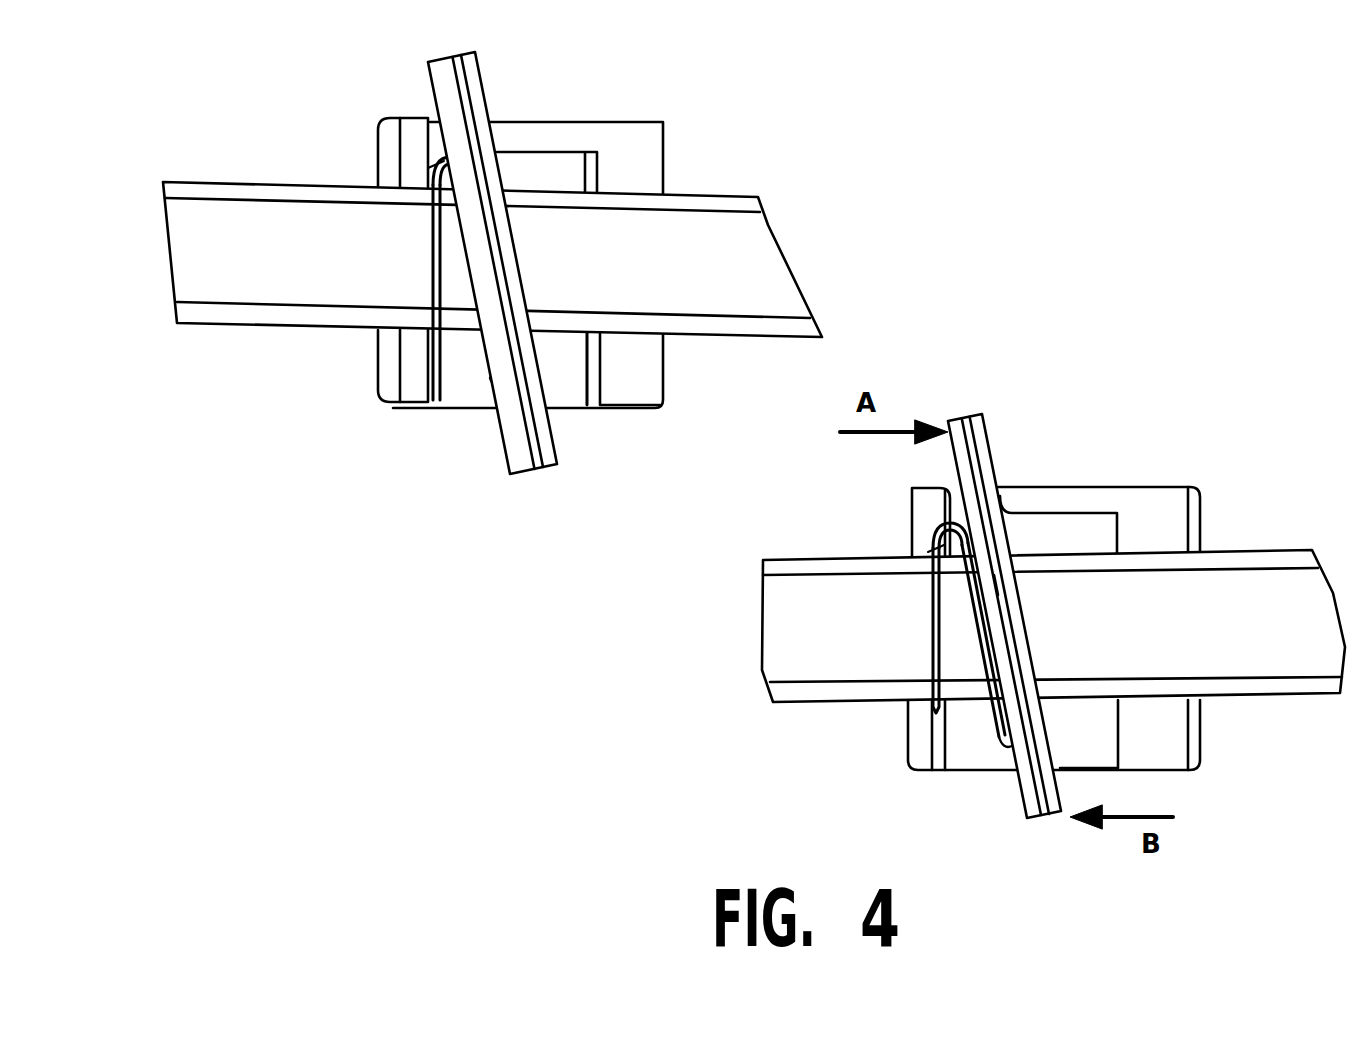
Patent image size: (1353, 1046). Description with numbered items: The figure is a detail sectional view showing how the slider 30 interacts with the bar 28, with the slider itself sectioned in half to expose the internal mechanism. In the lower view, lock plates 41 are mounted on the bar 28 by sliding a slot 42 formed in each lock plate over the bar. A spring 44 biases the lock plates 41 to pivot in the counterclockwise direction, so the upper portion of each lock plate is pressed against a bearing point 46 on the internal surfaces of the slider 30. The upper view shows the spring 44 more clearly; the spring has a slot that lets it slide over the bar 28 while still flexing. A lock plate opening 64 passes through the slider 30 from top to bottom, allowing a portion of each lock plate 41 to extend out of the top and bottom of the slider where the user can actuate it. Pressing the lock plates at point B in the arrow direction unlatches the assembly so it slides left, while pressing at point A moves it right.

The bar 28 is at (293, 210).
The slider 30 is at (648, 160).
The lock plate 41 is at (437, 78).
The slot 42 is at (1013, 583).
The spring 44 is at (495, 358).
The bearing point 46 is at (1000, 507).
The lock plate opening 64 is at (572, 382).